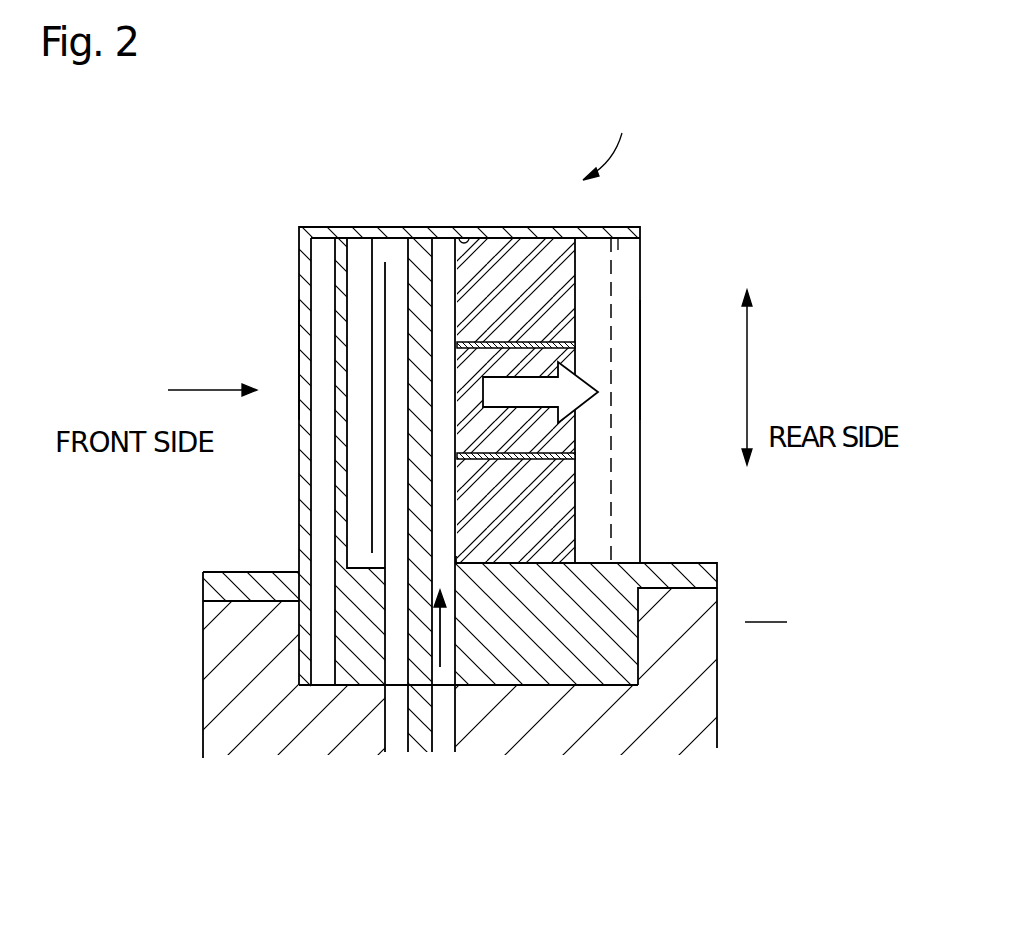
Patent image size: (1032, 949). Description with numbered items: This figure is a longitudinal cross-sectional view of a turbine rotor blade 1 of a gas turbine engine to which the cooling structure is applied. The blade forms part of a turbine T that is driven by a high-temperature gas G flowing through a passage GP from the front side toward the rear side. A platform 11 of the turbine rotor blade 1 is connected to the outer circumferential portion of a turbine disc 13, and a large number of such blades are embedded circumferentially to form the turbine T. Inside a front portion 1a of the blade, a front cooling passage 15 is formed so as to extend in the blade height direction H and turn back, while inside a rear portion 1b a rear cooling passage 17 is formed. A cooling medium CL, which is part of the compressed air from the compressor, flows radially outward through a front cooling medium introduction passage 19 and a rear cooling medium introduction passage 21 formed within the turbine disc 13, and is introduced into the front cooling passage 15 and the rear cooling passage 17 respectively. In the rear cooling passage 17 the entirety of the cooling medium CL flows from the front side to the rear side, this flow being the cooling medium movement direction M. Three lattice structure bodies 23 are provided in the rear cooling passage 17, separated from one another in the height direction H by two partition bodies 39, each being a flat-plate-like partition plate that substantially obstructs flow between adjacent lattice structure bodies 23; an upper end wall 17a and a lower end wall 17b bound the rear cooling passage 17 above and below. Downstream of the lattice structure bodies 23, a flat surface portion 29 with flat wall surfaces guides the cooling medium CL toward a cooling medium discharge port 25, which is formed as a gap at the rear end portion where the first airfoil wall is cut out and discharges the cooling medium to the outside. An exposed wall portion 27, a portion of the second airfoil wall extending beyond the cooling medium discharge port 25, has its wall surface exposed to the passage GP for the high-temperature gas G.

The turbine rotor blade 1 is at (296, 228).
The front portion 1a is at (299, 262).
The rear portion 1b is at (630, 216).
The platform 11 is at (237, 583).
The turbine disc 13 is at (693, 698).
The front cooling passage 15 is at (396, 255).
The rear cooling passage 17 is at (440, 253).
The upper end wall 17a is at (471, 236).
The lower end wall 17b is at (462, 558).
The front cooling medium introduction passage 19 is at (392, 713).
The rear cooling medium introduction passage 21 is at (447, 725).
The lattice structure body 23 is at (498, 243).
The cooling medium discharge port 25 is at (611, 290).
The exposed wall portion 27 is at (618, 247).
The flat surface portion 29 is at (590, 438).
The partition body 39 is at (575, 345).
The cooling medium movement direction M is at (600, 372).
The turbine T is at (608, 137).
The high-temperature gas G is at (207, 390).
The blade height direction H is at (747, 379).
The cooling medium CL is at (440, 638).
The passage GP is at (766, 604).